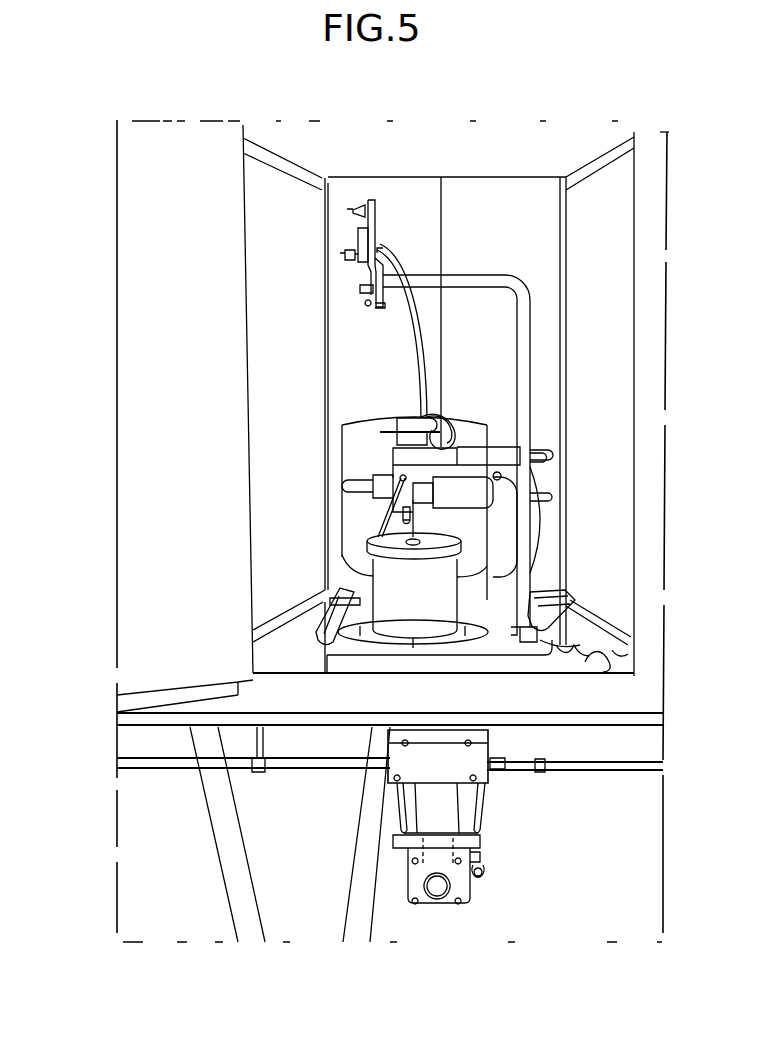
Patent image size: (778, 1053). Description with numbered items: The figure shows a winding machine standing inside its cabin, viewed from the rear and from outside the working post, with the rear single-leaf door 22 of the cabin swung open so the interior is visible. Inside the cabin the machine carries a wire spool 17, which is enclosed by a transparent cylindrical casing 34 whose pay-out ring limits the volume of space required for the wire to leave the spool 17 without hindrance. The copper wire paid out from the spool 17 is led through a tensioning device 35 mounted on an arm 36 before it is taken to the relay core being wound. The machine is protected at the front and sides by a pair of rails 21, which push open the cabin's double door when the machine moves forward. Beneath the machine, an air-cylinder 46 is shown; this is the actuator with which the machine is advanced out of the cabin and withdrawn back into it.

The wire spool 17 is at (375, 572).
The rails 21 is at (568, 606).
The single leaf door 22 is at (150, 642).
The transparent cylindrical casing 34 is at (343, 452).
The tensioning device 35 is at (372, 200).
The arm 36 is at (458, 283).
The air-cylinder 46 is at (443, 811).